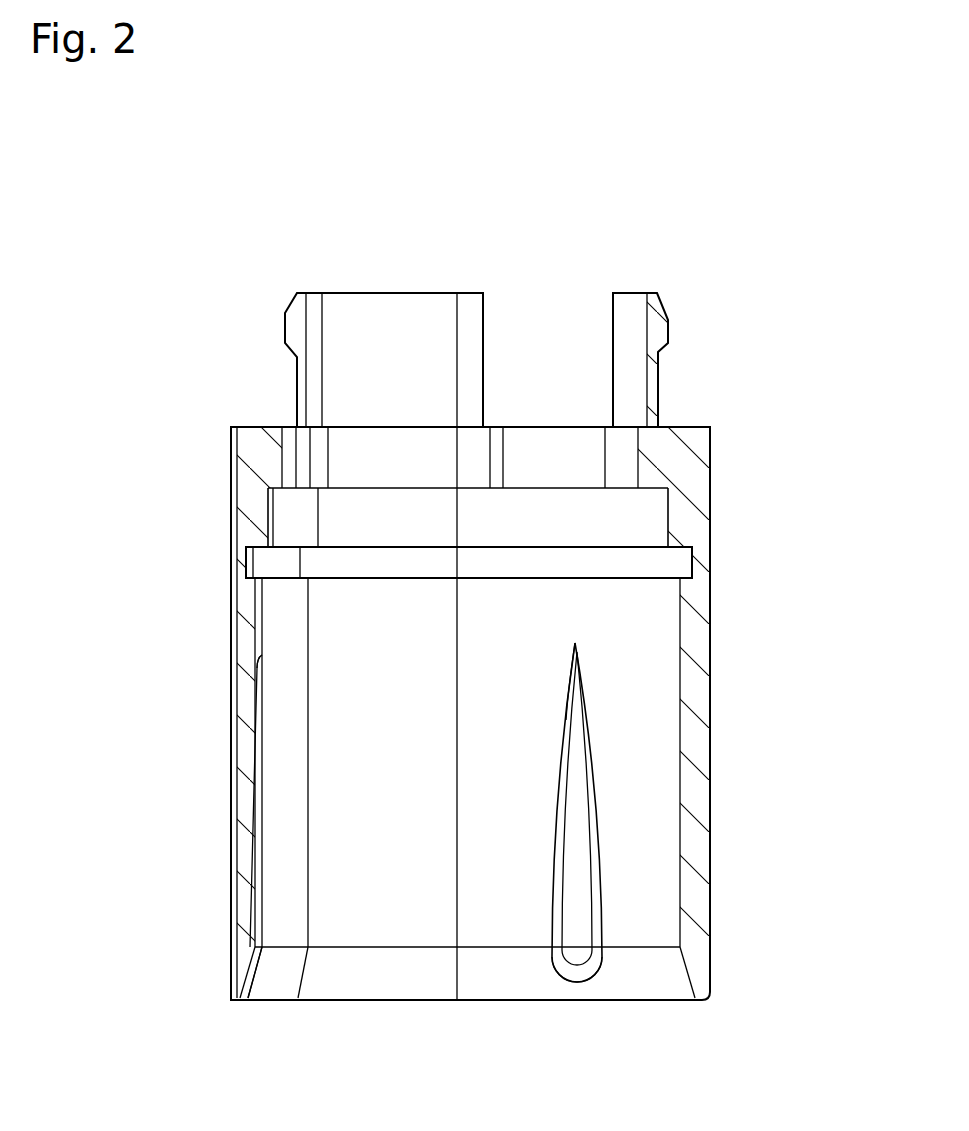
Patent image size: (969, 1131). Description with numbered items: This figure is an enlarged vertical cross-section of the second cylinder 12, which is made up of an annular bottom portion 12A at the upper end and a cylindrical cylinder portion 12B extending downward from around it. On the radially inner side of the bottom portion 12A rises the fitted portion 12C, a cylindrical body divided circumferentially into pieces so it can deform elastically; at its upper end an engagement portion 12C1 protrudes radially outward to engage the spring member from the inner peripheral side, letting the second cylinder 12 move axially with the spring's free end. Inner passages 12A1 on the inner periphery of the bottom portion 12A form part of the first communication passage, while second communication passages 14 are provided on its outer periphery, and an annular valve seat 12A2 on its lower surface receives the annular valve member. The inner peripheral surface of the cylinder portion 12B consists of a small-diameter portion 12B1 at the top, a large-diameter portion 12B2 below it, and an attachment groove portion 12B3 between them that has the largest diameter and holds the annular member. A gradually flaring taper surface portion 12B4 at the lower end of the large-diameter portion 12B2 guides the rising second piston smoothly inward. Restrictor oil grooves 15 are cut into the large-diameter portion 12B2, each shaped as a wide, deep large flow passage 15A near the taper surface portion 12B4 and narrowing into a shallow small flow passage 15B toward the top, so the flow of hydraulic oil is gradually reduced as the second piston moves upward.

The second cylinder 12 is at (716, 432).
The bottom portion 12A is at (659, 440).
The inner passages 12A1 is at (290, 440).
The annular valve seat 12A2 is at (648, 492).
The cylinder portion 12B is at (247, 742).
The small-diameter portion 12B1 is at (285, 521).
The large-diameter portion 12B2 is at (663, 790).
The attachment groove portion 12B3 is at (258, 566).
The taper surface portion 12B4 is at (430, 977).
The fitted portion 12C is at (413, 315).
The engagement portion 12C1 is at (662, 318).
The second communication passages 14 is at (232, 634).
The restrictor oil grooves 15 is at (262, 875).
The large flow passage 15A is at (258, 972).
The small flow passage 15B is at (262, 665).